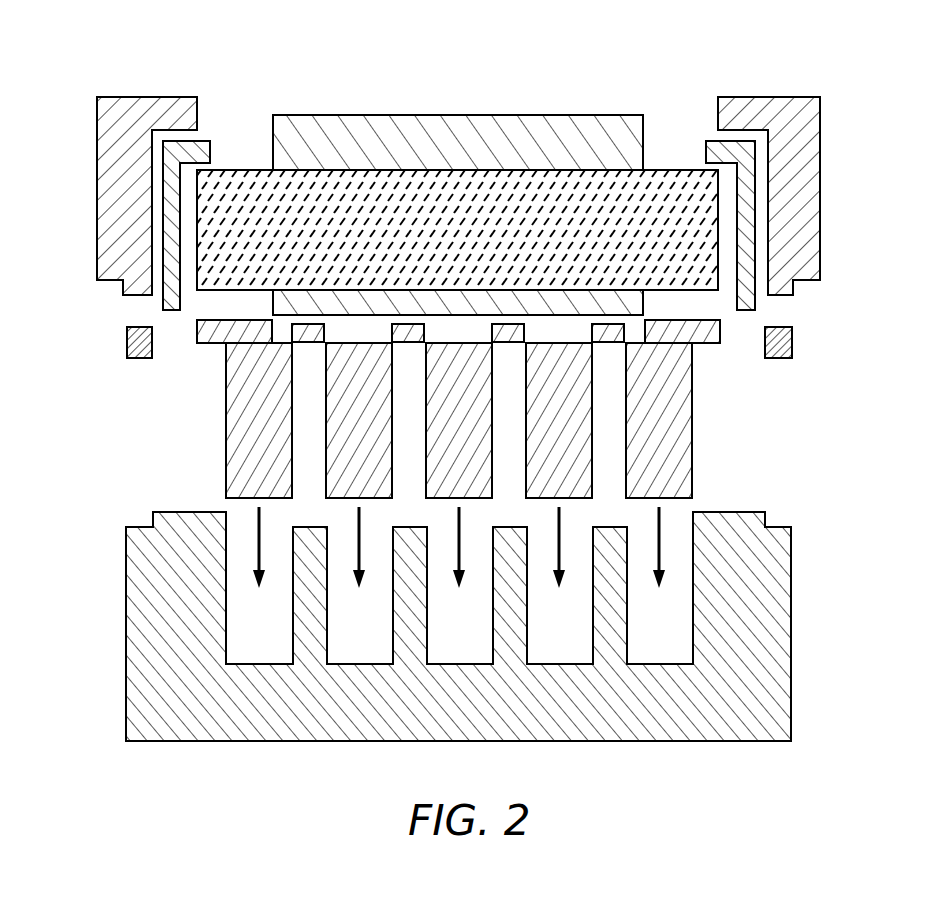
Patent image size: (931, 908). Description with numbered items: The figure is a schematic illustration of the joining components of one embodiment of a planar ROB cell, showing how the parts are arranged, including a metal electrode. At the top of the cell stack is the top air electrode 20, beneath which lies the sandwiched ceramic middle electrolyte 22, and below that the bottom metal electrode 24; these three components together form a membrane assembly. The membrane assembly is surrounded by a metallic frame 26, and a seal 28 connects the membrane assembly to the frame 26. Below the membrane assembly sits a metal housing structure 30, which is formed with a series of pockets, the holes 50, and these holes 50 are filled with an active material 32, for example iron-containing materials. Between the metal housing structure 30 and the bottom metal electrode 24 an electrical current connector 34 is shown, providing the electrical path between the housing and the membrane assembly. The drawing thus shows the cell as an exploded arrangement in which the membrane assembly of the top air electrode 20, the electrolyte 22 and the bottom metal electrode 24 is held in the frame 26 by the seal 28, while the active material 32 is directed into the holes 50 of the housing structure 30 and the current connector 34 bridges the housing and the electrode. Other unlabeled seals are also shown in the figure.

The top air electrode 20 is at (372, 127).
The ceramic middle electrolyte 22 is at (458, 187).
The bottom metal electrode 24 is at (645, 303).
The metallic frame 26 is at (112, 250).
The seal 28 is at (163, 300).
The metal housing structure 30 is at (137, 610).
The active material 32 is at (687, 433).
The electrical current connector 34 is at (592, 331).
The holes 50 is at (674, 548).